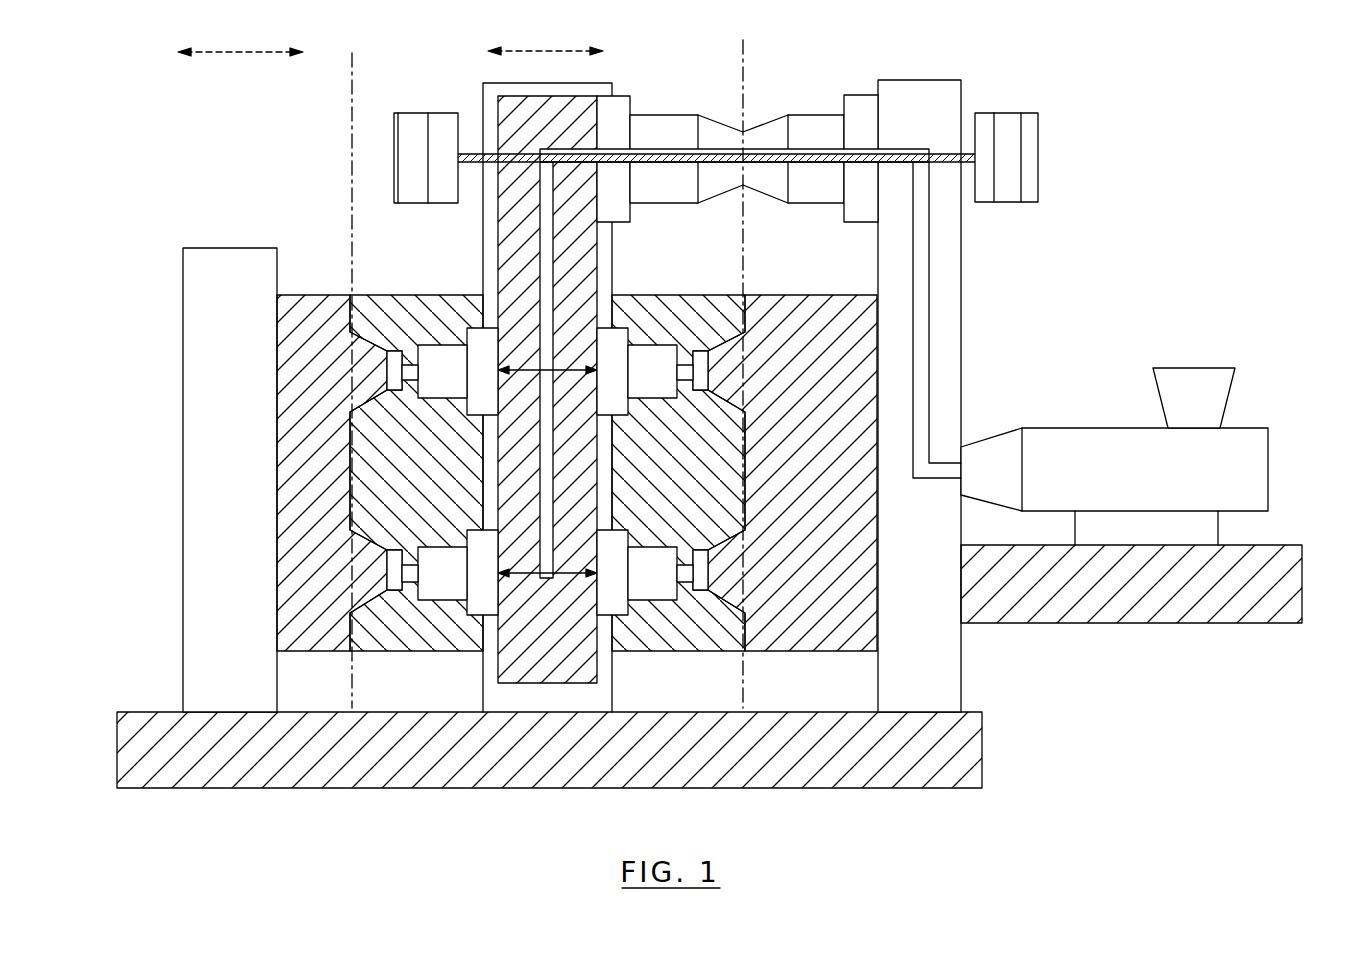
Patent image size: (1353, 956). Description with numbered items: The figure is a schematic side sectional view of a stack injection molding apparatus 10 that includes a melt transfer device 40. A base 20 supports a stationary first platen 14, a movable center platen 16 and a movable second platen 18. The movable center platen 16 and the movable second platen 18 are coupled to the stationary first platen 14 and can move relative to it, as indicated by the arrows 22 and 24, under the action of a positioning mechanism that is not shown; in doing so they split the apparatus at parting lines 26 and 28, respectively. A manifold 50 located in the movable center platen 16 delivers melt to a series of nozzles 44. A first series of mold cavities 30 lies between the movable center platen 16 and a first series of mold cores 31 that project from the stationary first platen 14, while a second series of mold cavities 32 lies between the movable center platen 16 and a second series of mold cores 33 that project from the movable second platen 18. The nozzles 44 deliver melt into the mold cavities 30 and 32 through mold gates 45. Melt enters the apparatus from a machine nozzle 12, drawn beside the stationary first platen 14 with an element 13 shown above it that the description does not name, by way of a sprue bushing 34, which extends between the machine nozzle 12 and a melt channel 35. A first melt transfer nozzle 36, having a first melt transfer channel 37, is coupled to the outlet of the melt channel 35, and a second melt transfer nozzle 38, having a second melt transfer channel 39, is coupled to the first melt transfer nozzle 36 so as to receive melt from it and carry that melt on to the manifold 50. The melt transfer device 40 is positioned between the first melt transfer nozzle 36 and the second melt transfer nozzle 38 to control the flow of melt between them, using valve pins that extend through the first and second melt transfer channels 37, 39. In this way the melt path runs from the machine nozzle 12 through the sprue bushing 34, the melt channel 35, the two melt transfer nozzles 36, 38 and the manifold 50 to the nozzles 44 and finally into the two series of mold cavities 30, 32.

The stack injection molding apparatus 10 is at (1113, 211).
The machine nozzle 12 is at (1118, 440).
The hopper 13 is at (1198, 375).
The stationary first platen 14 is at (906, 616).
The movable center platen 16 is at (545, 455).
The movable second platen 18 is at (216, 491).
The base 20 is at (968, 740).
The arrow 22 is at (612, 52).
The arrow 24 is at (302, 55).
The parting line 26 is at (745, 48).
The parting line 28 is at (350, 282).
The first series of mold cavities 30 is at (702, 587).
The first series of mold cores 31 is at (732, 593).
The second series of mold cavities 32 is at (393, 587).
The second series of mold cores 33 is at (360, 587).
The sprue bushing 34 is at (938, 468).
The melt channel 35 is at (925, 308).
The first melt transfer nozzle 36 is at (818, 125).
The first melt transfer channel 37 is at (812, 195).
The second melt transfer nozzle 38 is at (667, 125).
The second melt transfer channel 39 is at (655, 200).
The melt transfer device 40 is at (762, 203).
The nozzle 44 is at (443, 355).
The mold gate 45 is at (407, 357).
The manifold 50 is at (522, 683).